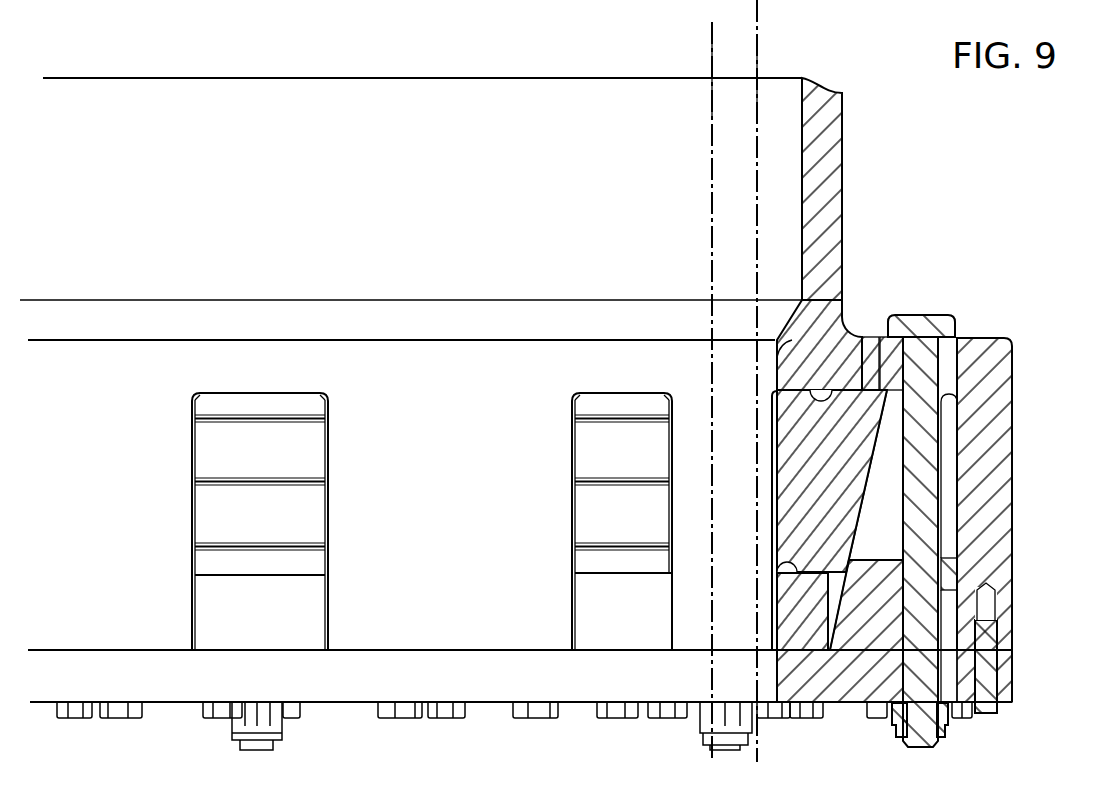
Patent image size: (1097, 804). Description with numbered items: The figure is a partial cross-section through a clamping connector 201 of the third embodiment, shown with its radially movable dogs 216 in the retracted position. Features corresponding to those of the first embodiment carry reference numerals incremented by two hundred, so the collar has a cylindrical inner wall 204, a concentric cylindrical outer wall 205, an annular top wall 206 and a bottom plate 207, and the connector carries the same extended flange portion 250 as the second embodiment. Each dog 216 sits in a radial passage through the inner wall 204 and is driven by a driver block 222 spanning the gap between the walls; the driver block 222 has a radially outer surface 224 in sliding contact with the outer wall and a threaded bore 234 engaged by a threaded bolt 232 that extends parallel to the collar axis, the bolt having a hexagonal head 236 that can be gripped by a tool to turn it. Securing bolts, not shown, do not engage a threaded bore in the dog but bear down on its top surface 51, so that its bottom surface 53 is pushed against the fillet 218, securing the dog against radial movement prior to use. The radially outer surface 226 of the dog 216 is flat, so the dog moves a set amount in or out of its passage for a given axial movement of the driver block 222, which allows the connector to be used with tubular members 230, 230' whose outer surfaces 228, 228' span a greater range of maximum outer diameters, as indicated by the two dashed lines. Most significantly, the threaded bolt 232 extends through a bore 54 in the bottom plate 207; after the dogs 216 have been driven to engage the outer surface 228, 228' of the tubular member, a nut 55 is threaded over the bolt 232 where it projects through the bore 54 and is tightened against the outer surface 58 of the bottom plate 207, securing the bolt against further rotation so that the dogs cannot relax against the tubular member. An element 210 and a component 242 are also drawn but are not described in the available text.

The clamping connector 201 is at (925, 181).
The cylindrical inner wall 204 is at (827, 397).
The cylindrical outer wall 205 is at (1012, 492).
The annular top wall 206 is at (967, 338).
The bottom plate 207 is at (1005, 665).
The locating pin 210 is at (1000, 710).
The dog 216 is at (274, 402).
The fillet 218 is at (810, 637).
The driver block 222 is at (950, 577).
The radially outer surface of driver block 224 is at (848, 603).
The radially outer surface of dog 226 is at (870, 467).
The outer surface of tubular member 228 is at (662, 80).
The outer surface of tubular member 228' is at (806, 80).
The tubular member 230 is at (645, 385).
The tubular member 230' is at (812, 381).
The threaded bolt 232 is at (928, 525).
The threaded bore 234 is at (897, 580).
The hexagonal head 236 is at (937, 325).
The washer 242 is at (868, 362).
The extended flange portion 250 is at (830, 128).
The top surface of dog 51 is at (870, 355).
The bottom surface of dog 53 is at (770, 570).
The bore 54 is at (947, 673).
The nut 55 is at (899, 740).
The outer surface of bottom plate 58 is at (858, 700).